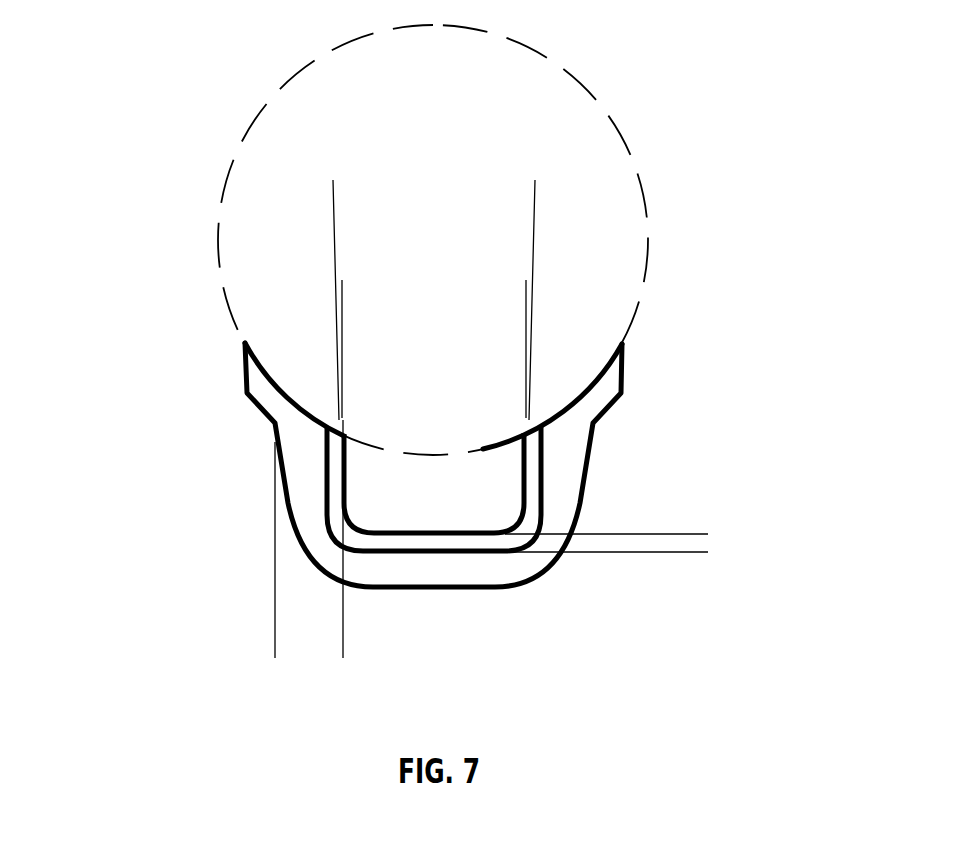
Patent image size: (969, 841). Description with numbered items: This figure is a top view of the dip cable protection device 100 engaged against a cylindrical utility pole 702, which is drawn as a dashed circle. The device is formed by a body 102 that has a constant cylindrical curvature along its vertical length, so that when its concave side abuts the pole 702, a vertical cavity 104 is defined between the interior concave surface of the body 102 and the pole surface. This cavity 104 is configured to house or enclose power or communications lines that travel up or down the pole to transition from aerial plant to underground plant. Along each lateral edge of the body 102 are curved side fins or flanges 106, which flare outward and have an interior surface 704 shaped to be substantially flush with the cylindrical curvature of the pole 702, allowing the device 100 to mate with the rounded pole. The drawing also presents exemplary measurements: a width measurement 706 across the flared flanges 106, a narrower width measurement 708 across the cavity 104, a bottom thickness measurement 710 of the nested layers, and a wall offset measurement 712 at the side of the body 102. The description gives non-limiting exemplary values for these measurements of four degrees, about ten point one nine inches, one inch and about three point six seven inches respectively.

The dip cable protection device 100 is at (411, 436).
The body 102 is at (586, 475).
The cavity 104 is at (450, 509).
The flanges 106 is at (233, 382).
The utility pole 702 is at (260, 109).
The interior surface 704 is at (299, 372).
The measurement 706 is at (503, 198).
The measurement 708 is at (496, 300).
The measurement 710 is at (690, 473).
The measurement 712 is at (403, 638).